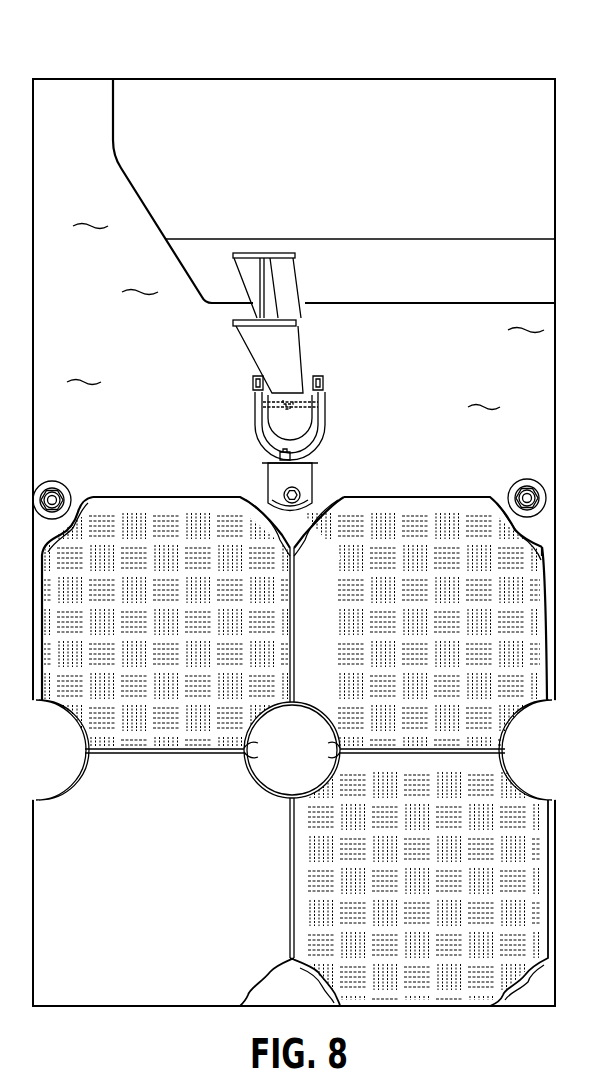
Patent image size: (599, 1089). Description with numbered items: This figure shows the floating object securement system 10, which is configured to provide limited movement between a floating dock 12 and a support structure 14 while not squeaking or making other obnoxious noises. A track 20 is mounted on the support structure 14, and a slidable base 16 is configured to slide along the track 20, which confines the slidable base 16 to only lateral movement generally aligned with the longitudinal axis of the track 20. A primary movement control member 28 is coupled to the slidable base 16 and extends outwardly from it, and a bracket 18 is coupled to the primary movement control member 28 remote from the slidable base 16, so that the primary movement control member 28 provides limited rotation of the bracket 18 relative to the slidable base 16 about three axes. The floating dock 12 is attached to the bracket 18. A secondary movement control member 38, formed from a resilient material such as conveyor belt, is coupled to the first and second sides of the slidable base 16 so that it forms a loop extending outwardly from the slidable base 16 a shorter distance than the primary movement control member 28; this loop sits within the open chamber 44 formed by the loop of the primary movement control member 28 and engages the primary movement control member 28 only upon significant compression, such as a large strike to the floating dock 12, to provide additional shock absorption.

The floating object securement system 10 is at (373, 268).
The floating dock 12 is at (383, 497).
The support structure 14 is at (317, 173).
The slidable base 16 is at (325, 383).
The bracket 18 is at (284, 479).
The track 20 is at (257, 256).
The primary movement control member 28 is at (264, 458).
The secondary movement control member 38 is at (262, 418).
The open chamber 44 is at (305, 438).